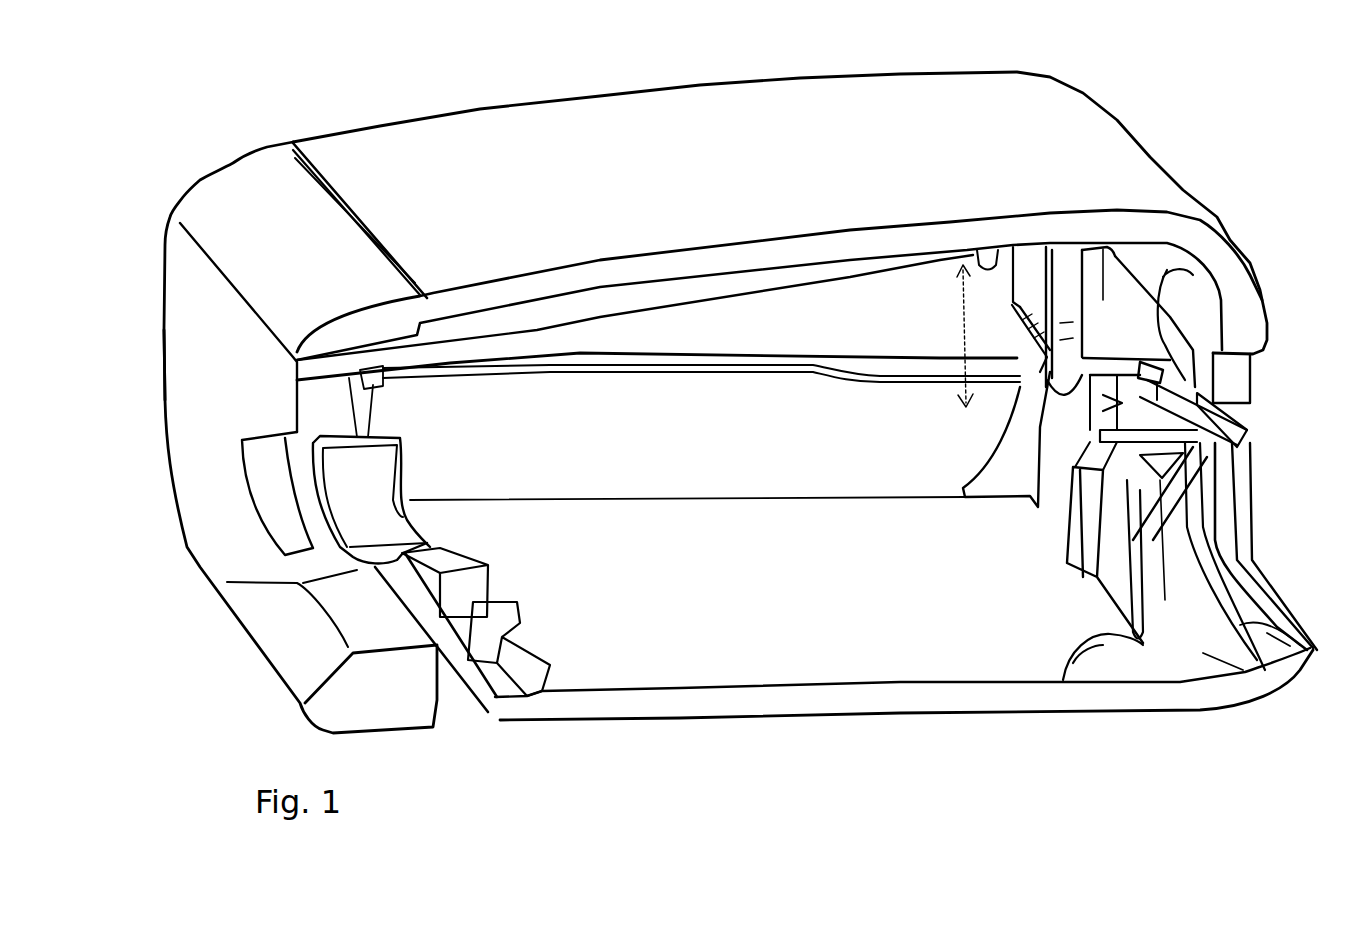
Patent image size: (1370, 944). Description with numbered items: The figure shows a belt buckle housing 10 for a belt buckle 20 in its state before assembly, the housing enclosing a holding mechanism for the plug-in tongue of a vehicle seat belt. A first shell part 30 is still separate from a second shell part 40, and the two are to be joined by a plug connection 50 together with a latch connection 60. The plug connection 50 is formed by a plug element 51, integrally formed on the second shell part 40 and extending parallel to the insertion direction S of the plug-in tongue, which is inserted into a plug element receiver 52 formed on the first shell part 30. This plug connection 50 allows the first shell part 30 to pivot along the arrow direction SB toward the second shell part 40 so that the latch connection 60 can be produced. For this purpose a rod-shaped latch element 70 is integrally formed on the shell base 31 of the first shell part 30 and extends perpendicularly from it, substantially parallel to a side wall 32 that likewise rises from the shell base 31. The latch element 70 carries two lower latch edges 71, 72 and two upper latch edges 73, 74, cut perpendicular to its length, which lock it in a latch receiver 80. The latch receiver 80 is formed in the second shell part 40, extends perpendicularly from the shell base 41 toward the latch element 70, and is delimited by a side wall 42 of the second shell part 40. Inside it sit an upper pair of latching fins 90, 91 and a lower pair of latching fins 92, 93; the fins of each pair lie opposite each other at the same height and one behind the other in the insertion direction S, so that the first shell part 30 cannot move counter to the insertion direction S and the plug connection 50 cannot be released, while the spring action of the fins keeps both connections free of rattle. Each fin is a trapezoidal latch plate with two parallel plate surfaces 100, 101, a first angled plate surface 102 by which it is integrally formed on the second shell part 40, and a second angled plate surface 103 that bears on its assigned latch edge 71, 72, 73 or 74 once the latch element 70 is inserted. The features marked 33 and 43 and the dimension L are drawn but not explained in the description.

The belt buckle housing 10 is at (1216, 212).
The belt buckle 20 is at (1240, 145).
The first shell part 30 is at (797, 112).
The shell base 31 is at (668, 165).
The side wall 32 is at (1258, 280).
The inner rib 33 is at (1180, 303).
The second shell part 40 is at (952, 703).
The shell base 41 is at (830, 673).
The side wall 42 is at (1203, 463).
The side wall block 43 is at (1250, 422).
The plug connection 50 is at (470, 725).
The plug element 51 is at (497, 707).
The plug element receiver 52 is at (453, 707).
The latch connection 60 is at (1097, 197).
The latch element 70 is at (1072, 302).
The lower latch edge 71 is at (1020, 387).
The lower latch edge 72 is at (1100, 353).
The upper latch edge 73 is at (1010, 302).
The upper latch edge 74 is at (1090, 322).
The latch receiver 80 is at (1113, 407).
The latching fin 90 is at (1109, 580).
The latching fin 91 is at (1186, 324).
The lower latching fin 92 is at (1093, 580).
The lower latching fin 93 is at (1165, 600).
The plate surface 100 is at (1148, 470).
The plate surface 101 is at (1183, 497).
The first angled plate surface 102 is at (1243, 460).
The second angled plate surface 103 is at (1160, 537).
The insertion direction S is at (157, 524).
The arrow direction SB is at (932, 240).
The length L is at (950, 336).